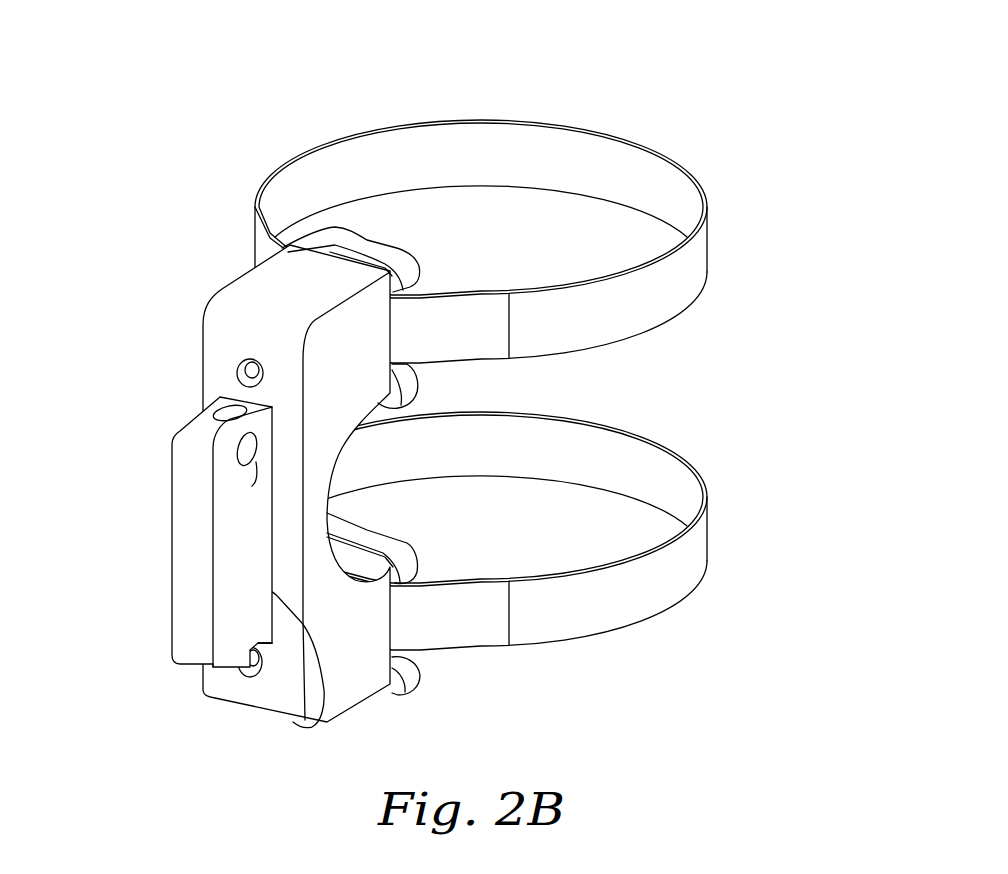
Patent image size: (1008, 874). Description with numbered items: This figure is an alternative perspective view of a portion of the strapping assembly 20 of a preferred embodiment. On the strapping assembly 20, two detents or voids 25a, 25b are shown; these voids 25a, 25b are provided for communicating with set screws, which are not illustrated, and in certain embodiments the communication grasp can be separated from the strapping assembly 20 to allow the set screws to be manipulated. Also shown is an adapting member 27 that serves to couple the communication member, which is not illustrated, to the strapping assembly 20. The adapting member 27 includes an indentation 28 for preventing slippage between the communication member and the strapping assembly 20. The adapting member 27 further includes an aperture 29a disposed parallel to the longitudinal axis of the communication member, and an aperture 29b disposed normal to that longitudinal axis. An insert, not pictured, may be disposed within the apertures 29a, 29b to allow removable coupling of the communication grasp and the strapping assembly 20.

The strapping assembly 20 is at (408, 385).
The detent or void 25a is at (237, 371).
The detent or void 25b is at (246, 668).
The adapting member 27 is at (167, 521).
The indentation 28 is at (322, 720).
The aperture 29a is at (253, 470).
The aperture 29b is at (200, 410).